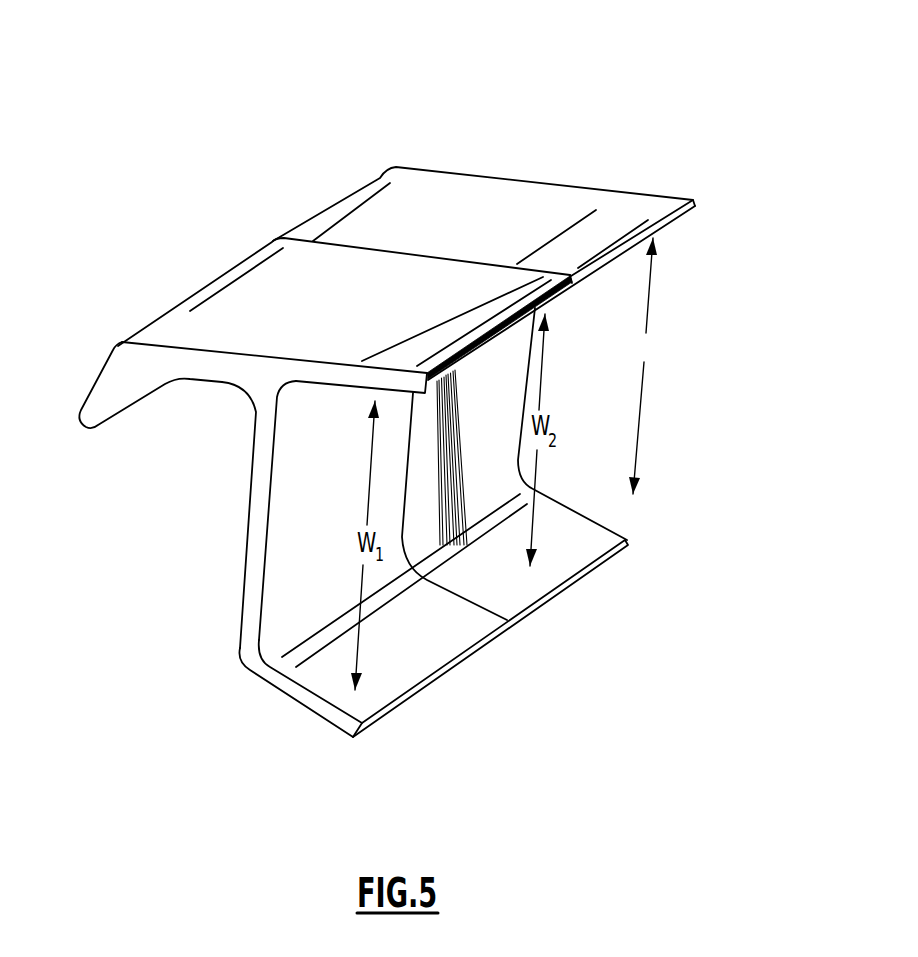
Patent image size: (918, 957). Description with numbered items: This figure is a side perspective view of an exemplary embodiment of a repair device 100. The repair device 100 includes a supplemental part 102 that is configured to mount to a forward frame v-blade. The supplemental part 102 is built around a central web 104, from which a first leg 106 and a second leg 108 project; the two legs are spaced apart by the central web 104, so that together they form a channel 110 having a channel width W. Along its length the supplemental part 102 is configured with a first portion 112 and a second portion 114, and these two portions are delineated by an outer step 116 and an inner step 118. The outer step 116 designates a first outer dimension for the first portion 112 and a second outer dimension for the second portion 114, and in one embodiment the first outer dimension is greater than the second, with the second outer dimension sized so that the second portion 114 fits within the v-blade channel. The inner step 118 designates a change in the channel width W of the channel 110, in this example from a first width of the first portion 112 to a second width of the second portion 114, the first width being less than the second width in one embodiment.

The repair device 100 is at (293, 69).
The supplemental part 102 is at (60, 760).
The central web 104 is at (232, 580).
The first leg 106 is at (603, 95).
The second leg 108 is at (669, 488).
The channel 110 is at (668, 313).
The first portion 112 is at (111, 298).
The second portion 114 is at (336, 160).
The outer step 116 is at (236, 228).
The inner step 118 is at (516, 586).